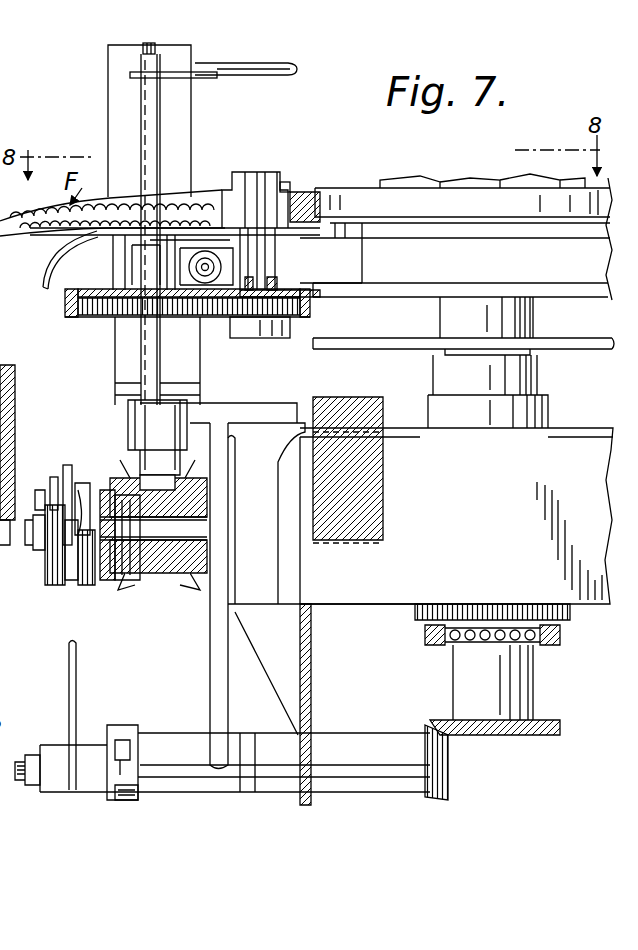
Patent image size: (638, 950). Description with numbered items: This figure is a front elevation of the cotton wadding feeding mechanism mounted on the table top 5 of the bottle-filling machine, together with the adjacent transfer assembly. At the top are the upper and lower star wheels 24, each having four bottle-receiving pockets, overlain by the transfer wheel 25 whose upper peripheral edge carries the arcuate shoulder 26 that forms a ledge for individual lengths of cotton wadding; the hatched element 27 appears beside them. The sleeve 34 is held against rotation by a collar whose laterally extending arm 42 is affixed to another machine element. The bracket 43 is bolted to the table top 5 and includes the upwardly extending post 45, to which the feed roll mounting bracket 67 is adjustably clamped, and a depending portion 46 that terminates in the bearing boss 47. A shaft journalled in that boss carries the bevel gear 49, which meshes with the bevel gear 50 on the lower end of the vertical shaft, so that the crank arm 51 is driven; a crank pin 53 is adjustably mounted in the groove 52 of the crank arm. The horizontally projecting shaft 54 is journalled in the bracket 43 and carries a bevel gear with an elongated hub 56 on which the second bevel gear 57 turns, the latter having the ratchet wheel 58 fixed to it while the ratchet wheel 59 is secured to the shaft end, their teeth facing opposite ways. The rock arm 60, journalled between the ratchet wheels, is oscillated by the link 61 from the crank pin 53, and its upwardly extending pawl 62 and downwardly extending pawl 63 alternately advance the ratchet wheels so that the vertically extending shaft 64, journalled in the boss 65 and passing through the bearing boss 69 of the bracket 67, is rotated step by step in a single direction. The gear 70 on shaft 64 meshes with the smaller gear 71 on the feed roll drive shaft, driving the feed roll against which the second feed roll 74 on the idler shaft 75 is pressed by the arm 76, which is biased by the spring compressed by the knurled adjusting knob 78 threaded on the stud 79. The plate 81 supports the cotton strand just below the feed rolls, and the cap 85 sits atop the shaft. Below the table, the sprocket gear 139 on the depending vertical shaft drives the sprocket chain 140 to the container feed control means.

The table top 5 is at (580, 405).
The star wheels 24 is at (575, 281).
The transfer wheel 25 is at (480, 205).
The arcuate shoulder 26 is at (315, 195).
The support block 27 is at (352, 238).
The sleeve 34 is at (22, 346).
The laterally extending arm 42 is at (272, 75).
The bracket 43 is at (262, 392).
The upwardly extending post 45 is at (115, 100).
The depending portion 46 is at (152, 671).
The bearing boss 47 is at (255, 770).
The bevel gear 49 is at (445, 776).
The bevel gear 50 is at (545, 736).
The crank arm 51 is at (125, 710).
The groove 52 is at (128, 786).
The crank pin 53 is at (30, 755).
The horizontally projecting shaft 54 is at (152, 525).
The elongated hub 56 is at (118, 580).
The second bevel gear 57 is at (125, 555).
The ratchet wheel 58 is at (72, 590).
The ratchet wheel 59 is at (50, 585).
The rock arm 60 is at (68, 470).
The link 61 is at (70, 680).
The spring-biased pawl 62 is at (55, 478).
The spring-biased pawl 63 is at (82, 490).
The vertically extending shaft 64 is at (160, 112).
The boss 65 is at (135, 420).
The feed roll mounting bracket 67 is at (130, 256).
The bearing boss 69 is at (148, 264).
The gear 70 is at (95, 317).
The gear 71 is at (292, 322).
The second feed roll 74 is at (230, 195).
The idler shaft 75 is at (288, 180).
The arm 76 is at (276, 255).
The knurled adjusting knob 78 is at (195, 282).
The stud 79 is at (208, 285).
The plate 81 is at (70, 240).
The cap 85 is at (143, 48).
The sprocket gear 139 is at (510, 637).
The sprocket chain 140 is at (430, 640).